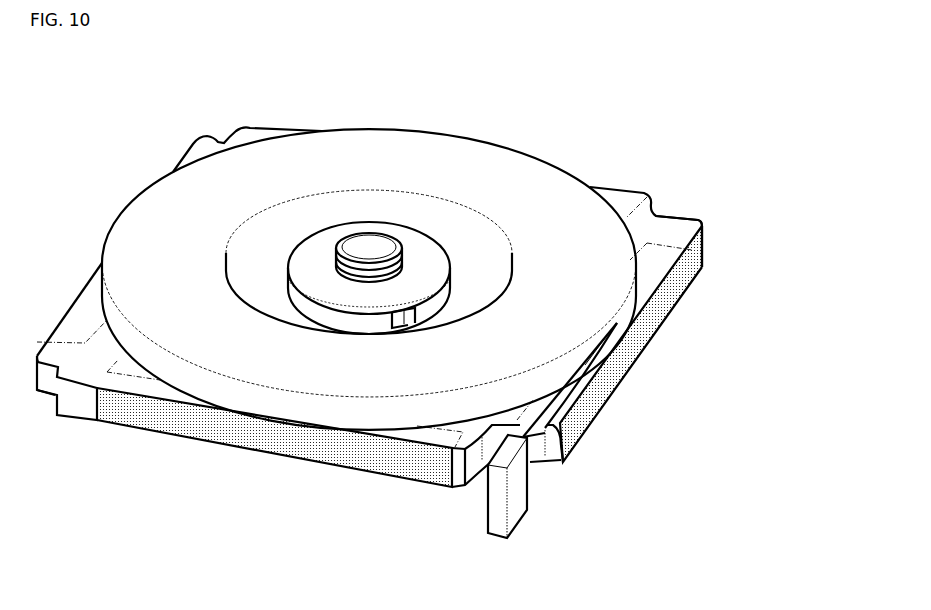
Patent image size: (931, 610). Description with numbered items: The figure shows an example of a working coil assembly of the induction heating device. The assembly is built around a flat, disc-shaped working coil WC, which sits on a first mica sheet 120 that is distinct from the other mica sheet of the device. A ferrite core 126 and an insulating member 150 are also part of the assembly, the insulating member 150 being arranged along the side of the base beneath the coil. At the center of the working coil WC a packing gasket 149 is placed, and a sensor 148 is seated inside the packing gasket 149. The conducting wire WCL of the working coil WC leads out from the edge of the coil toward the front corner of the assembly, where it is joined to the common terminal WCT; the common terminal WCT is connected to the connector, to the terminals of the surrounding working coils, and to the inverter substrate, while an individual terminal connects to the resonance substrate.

The first mica sheet 120 is at (673, 230).
The ferrite core 126 is at (702, 253).
The sensor 148 is at (372, 243).
The packing gasket 149 is at (430, 262).
The insulating member 150 is at (637, 343).
The working coil WC is at (533, 195).
The conducting wire WCL is at (553, 400).
The common terminal WCT is at (515, 497).